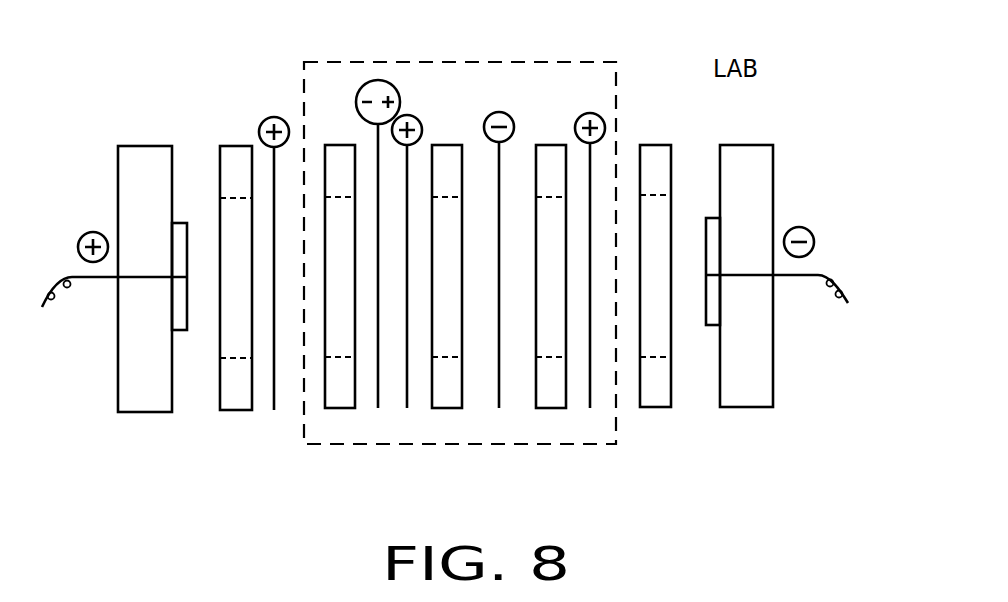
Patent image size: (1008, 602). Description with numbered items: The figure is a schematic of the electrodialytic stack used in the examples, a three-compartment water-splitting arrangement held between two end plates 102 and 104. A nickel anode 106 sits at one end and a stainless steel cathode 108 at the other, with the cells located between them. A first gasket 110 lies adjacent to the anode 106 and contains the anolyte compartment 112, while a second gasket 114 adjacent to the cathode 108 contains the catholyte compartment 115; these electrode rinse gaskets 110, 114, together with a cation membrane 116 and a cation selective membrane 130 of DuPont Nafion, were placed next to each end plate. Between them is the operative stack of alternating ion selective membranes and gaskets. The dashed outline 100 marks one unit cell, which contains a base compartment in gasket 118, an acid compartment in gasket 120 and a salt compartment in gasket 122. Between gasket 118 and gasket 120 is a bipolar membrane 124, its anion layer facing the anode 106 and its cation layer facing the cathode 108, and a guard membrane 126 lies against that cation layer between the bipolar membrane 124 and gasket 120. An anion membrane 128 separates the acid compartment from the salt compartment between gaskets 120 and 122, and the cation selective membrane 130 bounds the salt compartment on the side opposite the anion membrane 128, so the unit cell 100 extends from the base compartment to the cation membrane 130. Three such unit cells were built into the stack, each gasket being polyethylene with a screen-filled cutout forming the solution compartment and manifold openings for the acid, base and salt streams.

The unit cell 100 is at (490, 50).
The end plate 102 is at (128, 175).
The end plate 104 is at (760, 185).
The nickel anode 106 is at (175, 230).
The stainless steel cathode 108 is at (703, 214).
The first gasket 110 is at (239, 111).
The anolyte compartment 112 is at (235, 338).
The second gasket 114 is at (648, 136).
The right electrode 115 is at (650, 343).
The cation membrane 116 is at (274, 114).
The gasket 118 is at (337, 138).
The gasket 120 is at (447, 138).
The gasket 122 is at (550, 138).
The bipolar membrane 124 is at (371, 78).
The guard membrane 126 is at (409, 114).
The anion membrane 128 is at (506, 111).
The cation selective membrane 130 is at (598, 113).